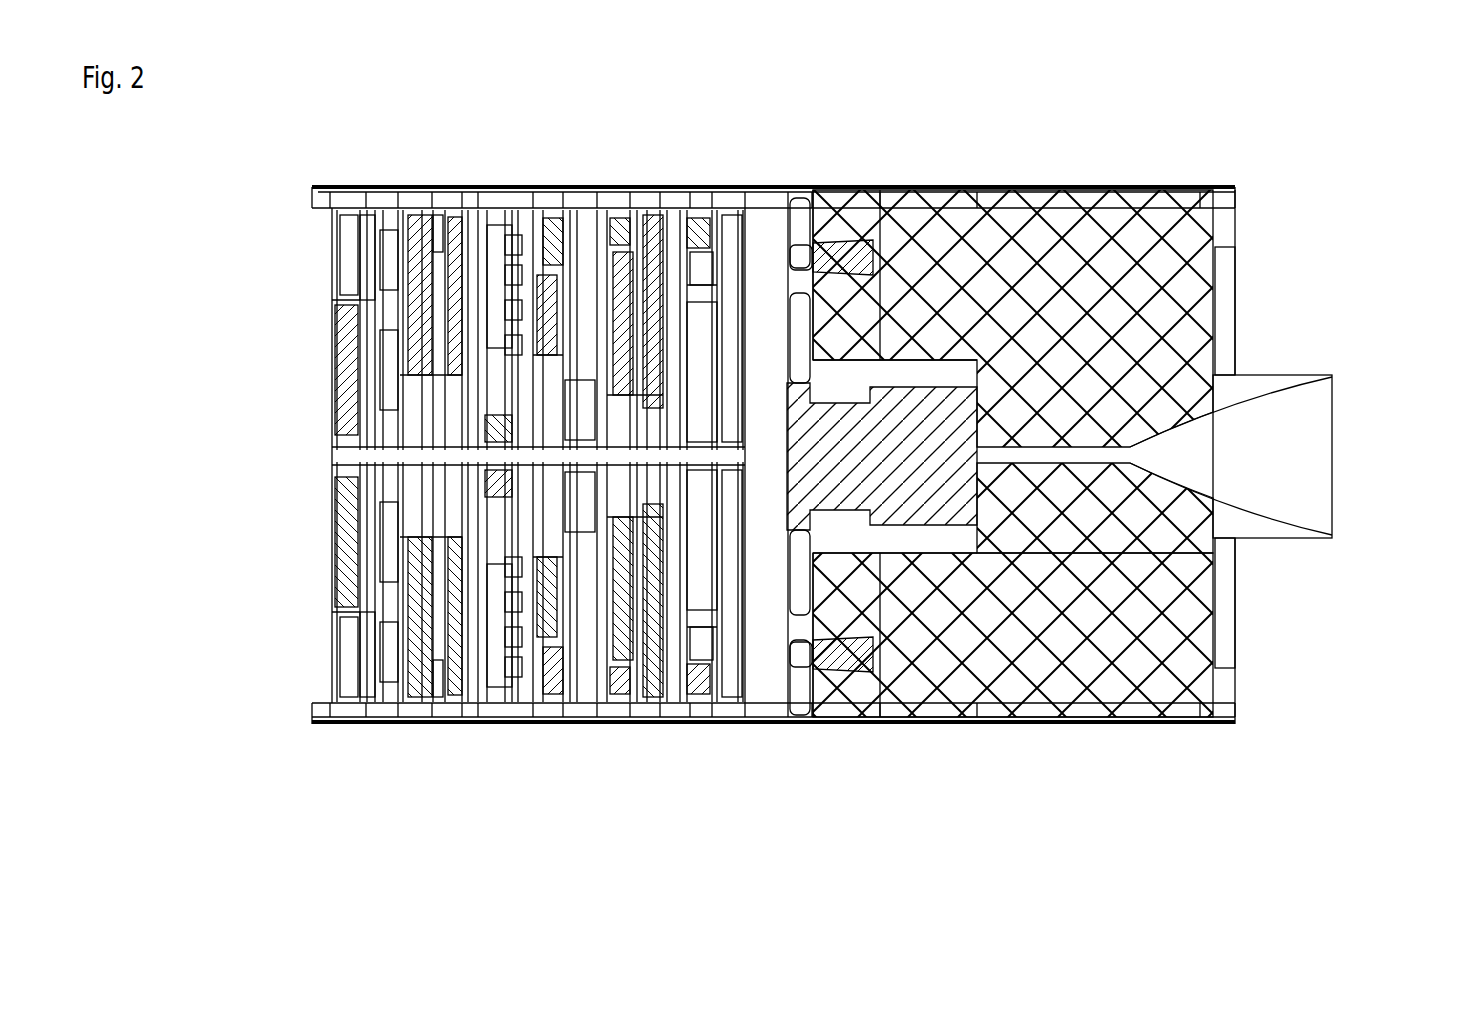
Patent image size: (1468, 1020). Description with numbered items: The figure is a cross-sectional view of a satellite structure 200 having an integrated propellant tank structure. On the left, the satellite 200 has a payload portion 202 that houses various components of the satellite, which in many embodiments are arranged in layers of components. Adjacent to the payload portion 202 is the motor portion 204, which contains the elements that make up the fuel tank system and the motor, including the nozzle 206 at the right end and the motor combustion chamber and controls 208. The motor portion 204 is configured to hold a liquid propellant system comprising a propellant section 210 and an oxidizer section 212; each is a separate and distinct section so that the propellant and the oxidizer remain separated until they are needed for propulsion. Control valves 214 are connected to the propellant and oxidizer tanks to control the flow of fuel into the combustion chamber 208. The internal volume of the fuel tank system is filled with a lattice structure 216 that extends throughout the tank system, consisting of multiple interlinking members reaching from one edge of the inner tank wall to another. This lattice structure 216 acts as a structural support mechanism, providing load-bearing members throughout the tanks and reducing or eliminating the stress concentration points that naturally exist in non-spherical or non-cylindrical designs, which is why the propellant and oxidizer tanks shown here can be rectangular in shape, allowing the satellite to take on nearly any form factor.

The satellite structure 200 is at (233, 213).
The payload portion 202 is at (335, 737).
The motor portion 204 is at (1117, 454).
The nozzle 206 is at (1215, 457).
The motor combustion chamber and controls 208 is at (908, 410).
The propellant section 210 is at (1250, 558).
The oxidizer section 212 is at (1119, 321).
The control valves 214 is at (820, 258).
The lattice structure 216 is at (1118, 307).